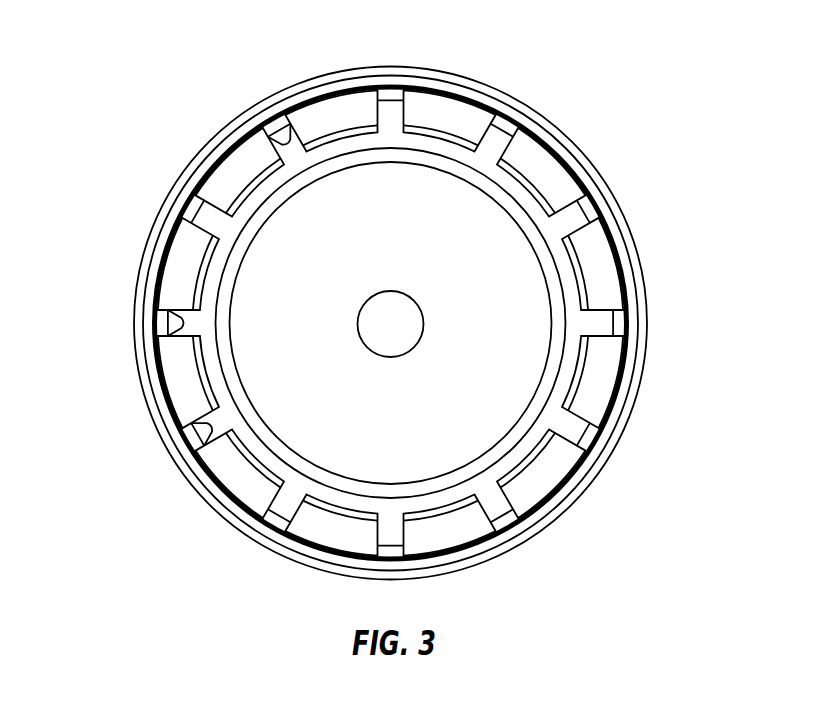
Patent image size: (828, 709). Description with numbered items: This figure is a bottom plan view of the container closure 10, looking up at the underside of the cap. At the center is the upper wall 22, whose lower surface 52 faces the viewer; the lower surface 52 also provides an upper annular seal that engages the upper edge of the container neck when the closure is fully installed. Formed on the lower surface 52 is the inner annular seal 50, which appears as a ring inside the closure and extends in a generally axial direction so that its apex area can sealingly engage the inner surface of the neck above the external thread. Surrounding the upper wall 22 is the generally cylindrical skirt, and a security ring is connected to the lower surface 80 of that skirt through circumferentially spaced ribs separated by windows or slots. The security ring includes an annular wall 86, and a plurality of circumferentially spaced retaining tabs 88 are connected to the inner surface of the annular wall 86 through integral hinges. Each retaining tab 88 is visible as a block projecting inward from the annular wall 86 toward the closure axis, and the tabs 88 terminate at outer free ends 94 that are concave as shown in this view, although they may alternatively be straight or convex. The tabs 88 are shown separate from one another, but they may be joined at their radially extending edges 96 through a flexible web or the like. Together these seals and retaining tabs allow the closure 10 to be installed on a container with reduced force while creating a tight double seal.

The closure 10 is at (622, 120).
The upper wall 22 is at (406, 272).
The inner annular seal 50 is at (391, 323).
The lower surface 52 is at (404, 252).
The lower surface 80 is at (417, 323).
The annular wall 86 is at (422, 323).
The retaining tabs 88 is at (396, 315).
The outer free end 94 is at (390, 322).
The radially extending edges 96 is at (180, 272).